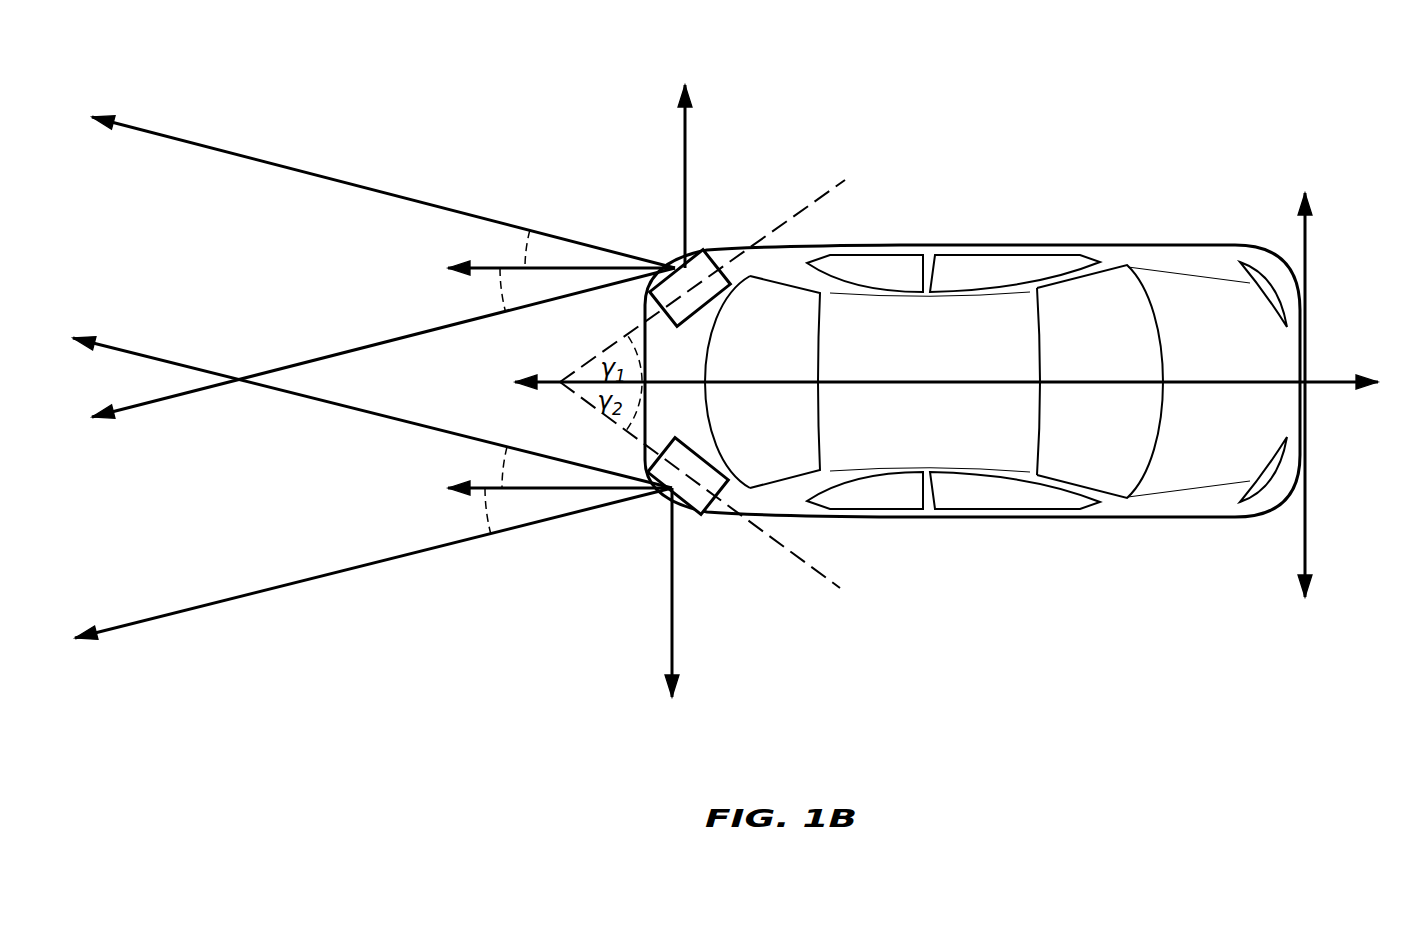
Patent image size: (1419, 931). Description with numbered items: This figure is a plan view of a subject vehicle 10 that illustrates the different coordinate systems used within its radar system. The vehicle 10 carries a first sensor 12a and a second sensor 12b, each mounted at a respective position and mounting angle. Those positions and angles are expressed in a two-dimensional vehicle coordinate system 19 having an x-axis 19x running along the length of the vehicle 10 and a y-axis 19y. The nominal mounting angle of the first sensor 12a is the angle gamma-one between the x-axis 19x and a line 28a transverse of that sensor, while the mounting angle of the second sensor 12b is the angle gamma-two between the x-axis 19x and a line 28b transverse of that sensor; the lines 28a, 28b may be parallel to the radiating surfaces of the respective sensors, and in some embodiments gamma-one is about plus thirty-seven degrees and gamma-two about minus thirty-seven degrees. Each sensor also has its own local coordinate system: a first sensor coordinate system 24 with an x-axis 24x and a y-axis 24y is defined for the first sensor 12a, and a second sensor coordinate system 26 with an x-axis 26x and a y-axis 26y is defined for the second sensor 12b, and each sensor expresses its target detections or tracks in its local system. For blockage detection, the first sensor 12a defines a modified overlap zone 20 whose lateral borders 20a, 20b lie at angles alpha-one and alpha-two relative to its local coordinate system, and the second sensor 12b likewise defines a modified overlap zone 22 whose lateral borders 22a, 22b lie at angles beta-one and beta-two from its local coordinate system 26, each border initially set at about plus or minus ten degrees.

The subject vehicle 10 is at (1213, 518).
The first sensor 12a is at (707, 248).
The second sensor 12b is at (705, 515).
The vehicle coordinate system 19 is at (959, 340).
The x-axis 19x is at (1322, 380).
The y-axis 19y is at (1302, 233).
The modified overlap zone 20 is at (383, 273).
The lateral border 20a is at (178, 137).
The lateral border 20b is at (155, 407).
The modified overlap zone 22 is at (372, 484).
The lateral border 22a is at (213, 607).
The lateral border 22b is at (152, 352).
The first sensor coordinate system 24 is at (558, 162).
The x-axis 24x is at (683, 238).
The y-axis 24y is at (588, 263).
The second sensor coordinate system 26 is at (551, 601).
The x-axis 26x is at (672, 560).
The y-axis 26y is at (605, 490).
The line transverse of the sensor 28a is at (840, 185).
The line transverse of the sensor 28b is at (835, 590).